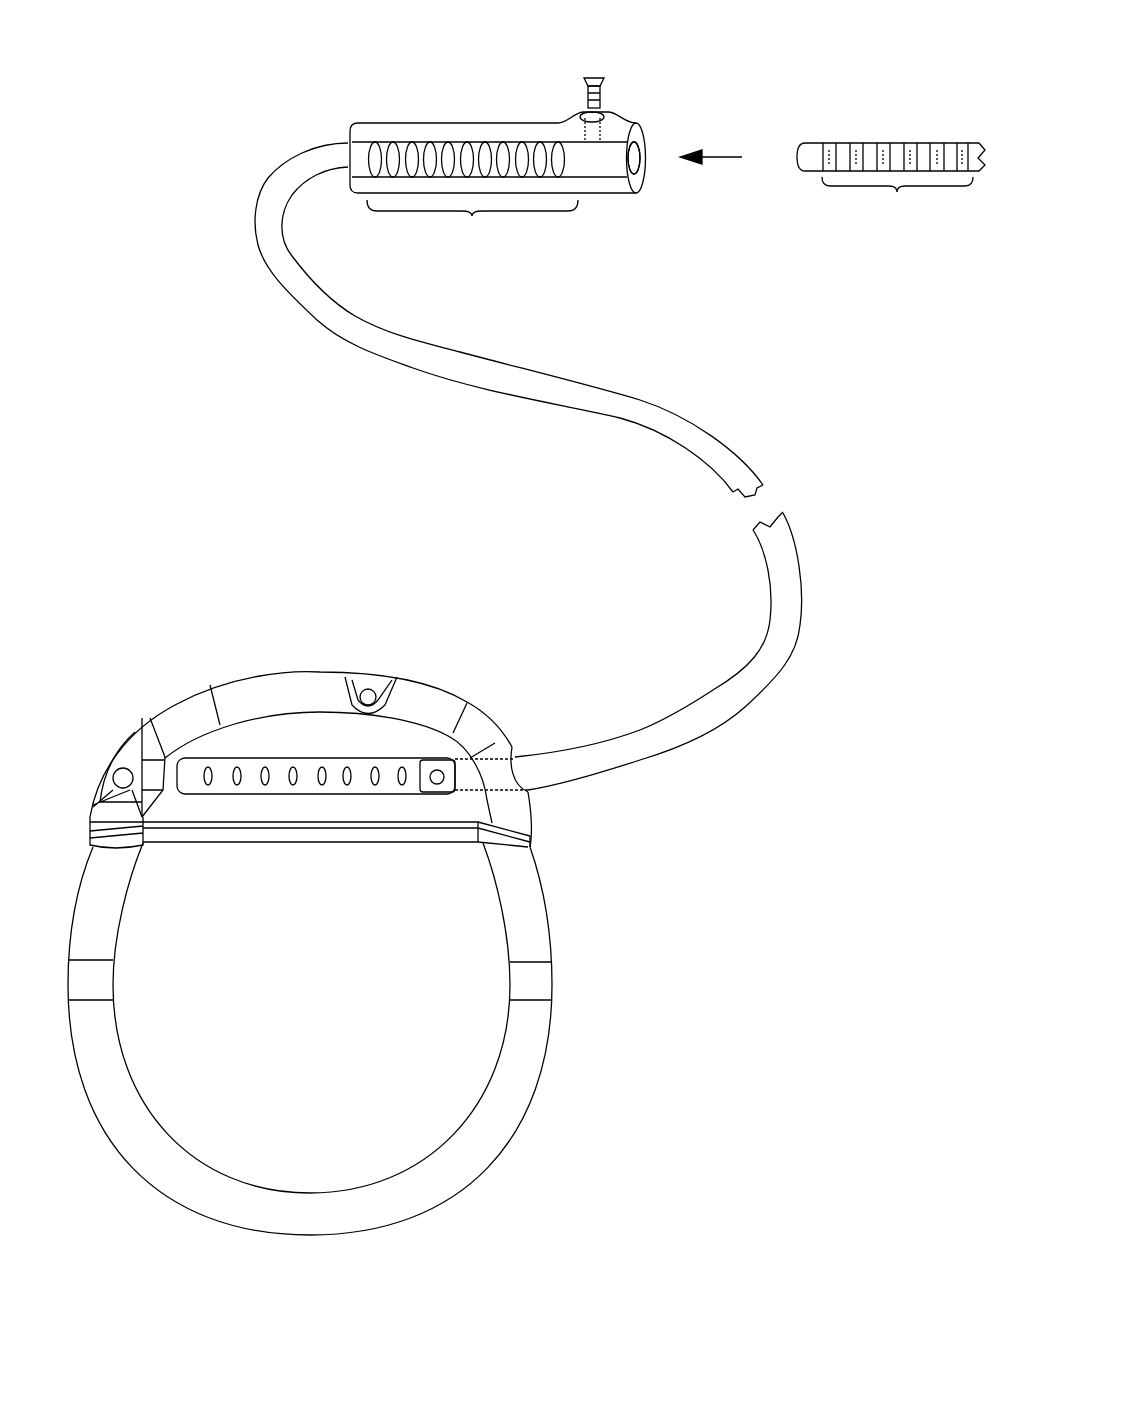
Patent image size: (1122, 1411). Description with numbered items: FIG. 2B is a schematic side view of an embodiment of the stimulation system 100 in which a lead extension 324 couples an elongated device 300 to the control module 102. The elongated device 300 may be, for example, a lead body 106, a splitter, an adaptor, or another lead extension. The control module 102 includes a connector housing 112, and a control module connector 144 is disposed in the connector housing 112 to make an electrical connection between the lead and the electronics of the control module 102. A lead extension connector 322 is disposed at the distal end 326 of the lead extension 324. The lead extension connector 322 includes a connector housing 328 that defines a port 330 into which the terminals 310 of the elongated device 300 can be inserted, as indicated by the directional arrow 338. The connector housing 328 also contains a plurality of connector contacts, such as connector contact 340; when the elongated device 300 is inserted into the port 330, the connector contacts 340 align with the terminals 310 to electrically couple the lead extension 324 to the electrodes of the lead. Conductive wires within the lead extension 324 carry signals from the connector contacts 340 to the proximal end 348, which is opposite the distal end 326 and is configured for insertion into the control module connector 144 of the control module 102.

The stimulation system 100 is at (757, 383).
The control module 102 is at (614, 988).
The lead body 106 is at (893, 142).
The connector housing 112 is at (415, 700).
The control module connector 144 is at (258, 757).
The elongated device 300 is at (858, 110).
The terminals 310 is at (897, 197).
The lead extension connector 322 is at (455, 124).
The lead extension 324 is at (621, 390).
The distal end 326 is at (340, 113).
The connector housing 328 is at (400, 140).
The port 330 is at (662, 184).
The directional arrow 338 is at (717, 157).
The connector contact 340 is at (472, 225).
The proximal end 348 is at (537, 730).